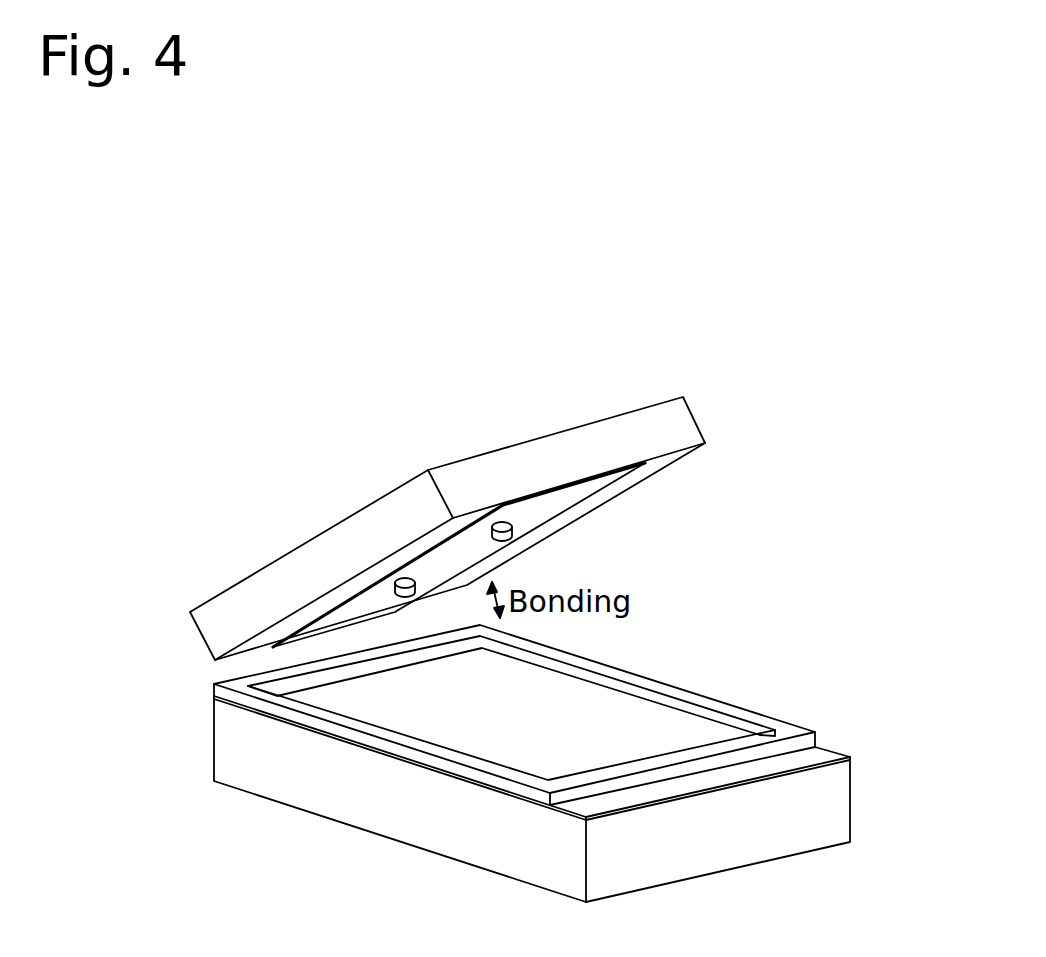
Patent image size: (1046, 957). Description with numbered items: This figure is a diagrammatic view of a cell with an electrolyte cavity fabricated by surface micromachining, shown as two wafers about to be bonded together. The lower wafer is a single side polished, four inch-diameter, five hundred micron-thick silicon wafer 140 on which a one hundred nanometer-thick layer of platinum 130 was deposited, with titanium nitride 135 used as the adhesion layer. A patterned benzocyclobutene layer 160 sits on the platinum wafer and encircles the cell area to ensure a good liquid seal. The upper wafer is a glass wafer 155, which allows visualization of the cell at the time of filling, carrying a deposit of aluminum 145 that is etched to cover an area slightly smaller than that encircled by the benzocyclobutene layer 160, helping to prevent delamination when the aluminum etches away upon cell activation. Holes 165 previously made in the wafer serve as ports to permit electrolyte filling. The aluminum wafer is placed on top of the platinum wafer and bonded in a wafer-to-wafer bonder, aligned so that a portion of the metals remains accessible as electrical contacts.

The platinum 130 is at (817, 750).
The titanium nitride 135 is at (823, 757).
The silicon wafer 140 is at (430, 855).
The aluminum 145 is at (553, 513).
The glass wafer 155 is at (302, 543).
The benzocyclobutene layer (BCB) 160 is at (637, 672).
The holes 165 is at (398, 578).